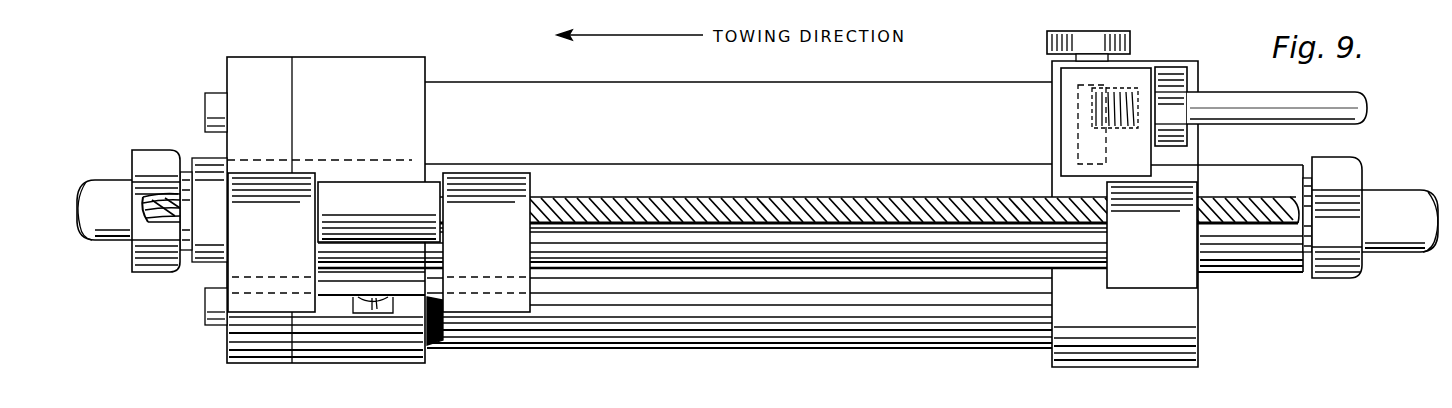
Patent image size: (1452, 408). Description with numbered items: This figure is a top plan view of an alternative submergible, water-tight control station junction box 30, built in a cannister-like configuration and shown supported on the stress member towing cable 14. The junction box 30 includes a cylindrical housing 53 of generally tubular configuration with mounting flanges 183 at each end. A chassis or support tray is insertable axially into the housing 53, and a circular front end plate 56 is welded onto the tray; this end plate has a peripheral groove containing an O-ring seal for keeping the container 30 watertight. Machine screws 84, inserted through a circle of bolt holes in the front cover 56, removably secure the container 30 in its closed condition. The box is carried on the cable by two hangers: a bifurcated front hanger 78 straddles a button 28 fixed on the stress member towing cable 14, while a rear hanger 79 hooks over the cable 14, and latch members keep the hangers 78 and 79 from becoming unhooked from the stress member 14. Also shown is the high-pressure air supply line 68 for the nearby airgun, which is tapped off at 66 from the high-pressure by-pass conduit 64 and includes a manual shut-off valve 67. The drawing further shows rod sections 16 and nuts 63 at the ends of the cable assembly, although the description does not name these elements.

The stress member towing cable 14 is at (686, 197).
The threaded rod 16 is at (97, 180).
The button 28 is at (392, 211).
The junction box 30 is at (1227, 324).
The cylindrical housing 53 is at (712, 82).
The front end plate 56 is at (243, 56).
The nut 63 is at (151, 152).
The high-pressure by-pass conduit 64 is at (835, 164).
The tap 66 is at (1061, 136).
The manual shut-off valve 67 is at (1100, 40).
The high-pressure air supply line 68 is at (1258, 92).
The bifurcated front hanger 78 is at (292, 249).
The rear hanger 79 is at (1174, 251).
The machine screws 84 is at (201, 107).
The mounting flanges 183 is at (405, 57).